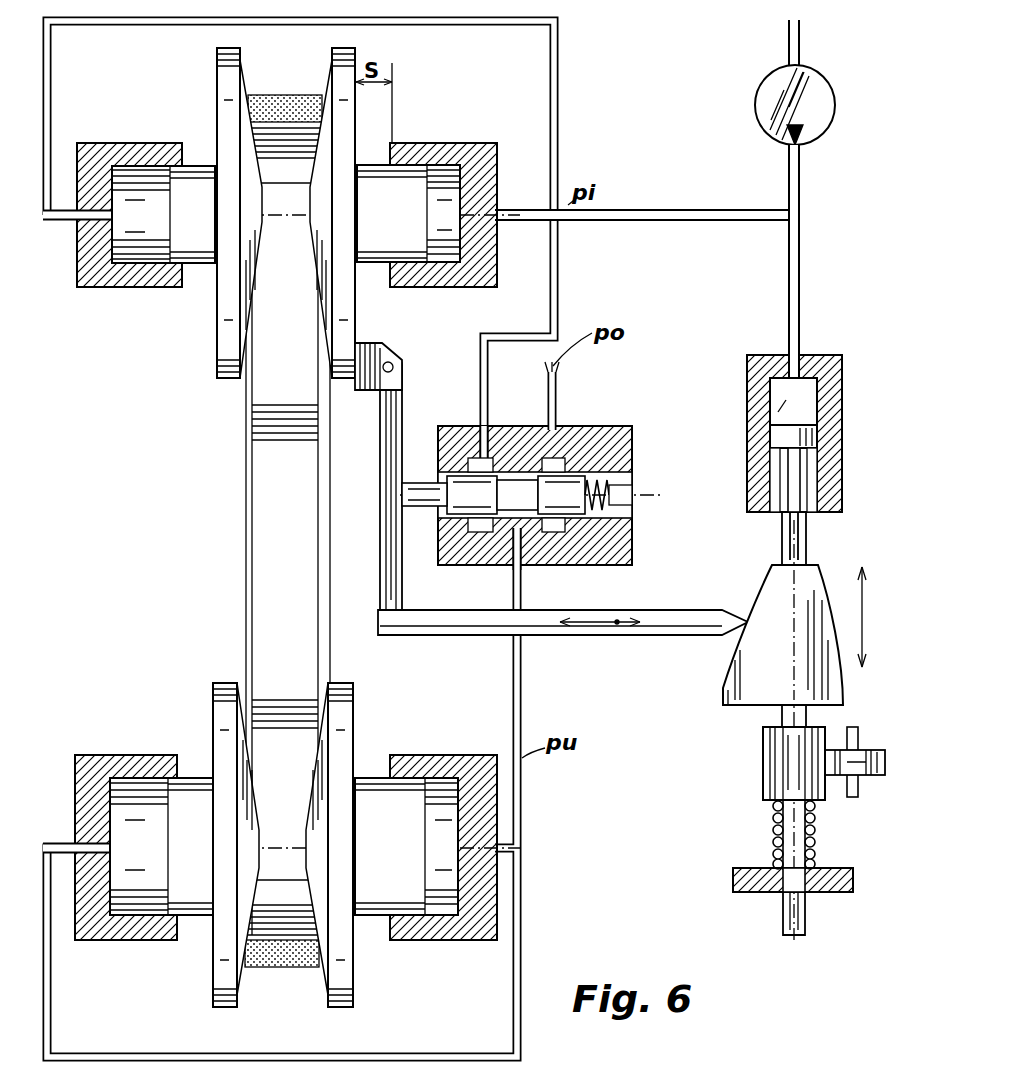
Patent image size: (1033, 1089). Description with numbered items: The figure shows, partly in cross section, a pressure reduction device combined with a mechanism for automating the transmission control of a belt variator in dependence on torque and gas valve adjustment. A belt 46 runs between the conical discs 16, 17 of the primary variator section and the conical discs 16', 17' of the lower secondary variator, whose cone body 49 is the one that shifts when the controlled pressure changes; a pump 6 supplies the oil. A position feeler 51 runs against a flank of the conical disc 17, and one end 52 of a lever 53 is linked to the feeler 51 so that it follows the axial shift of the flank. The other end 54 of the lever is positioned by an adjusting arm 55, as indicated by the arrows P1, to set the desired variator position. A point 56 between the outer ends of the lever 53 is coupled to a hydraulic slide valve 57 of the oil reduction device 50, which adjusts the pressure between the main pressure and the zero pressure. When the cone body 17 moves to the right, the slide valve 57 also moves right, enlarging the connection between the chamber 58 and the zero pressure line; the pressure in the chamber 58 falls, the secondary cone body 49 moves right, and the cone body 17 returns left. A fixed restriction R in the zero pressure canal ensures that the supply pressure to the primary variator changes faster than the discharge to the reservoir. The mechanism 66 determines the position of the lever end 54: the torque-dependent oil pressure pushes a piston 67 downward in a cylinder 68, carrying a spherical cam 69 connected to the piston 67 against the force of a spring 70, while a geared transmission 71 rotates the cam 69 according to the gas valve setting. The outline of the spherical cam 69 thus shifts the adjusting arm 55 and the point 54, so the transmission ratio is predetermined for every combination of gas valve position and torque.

The pump 6 is at (778, 88).
The conical disc of primary pulley 16 is at (217, 213).
The conical disc 17 is at (366, 207).
The conical disc of secondary pulley 16' is at (209, 845).
The conical disc of secondary pulley 17' is at (359, 863).
The belt 46 is at (285, 105).
The secondary cone body 49 is at (281, 863).
The oil reduction device 50 is at (502, 481).
The position feeler 51 is at (400, 345).
The lever end 52 is at (395, 367).
The lever 53 is at (381, 441).
The lever end 54 is at (391, 632).
The adjusting arm 55 is at (547, 628).
The point 56 is at (403, 497).
The hydraulic slide valve 57 is at (568, 540).
The chamber 58 is at (518, 490).
The mechanism 66 is at (778, 328).
The piston 67 is at (770, 437).
The cylinder 68 is at (760, 496).
The spherical cam 69 is at (782, 590).
The spring 70 is at (775, 826).
The geared transmission 71 is at (832, 793).
The arrows P1 is at (617, 628).
The fixed restriction R is at (560, 386).